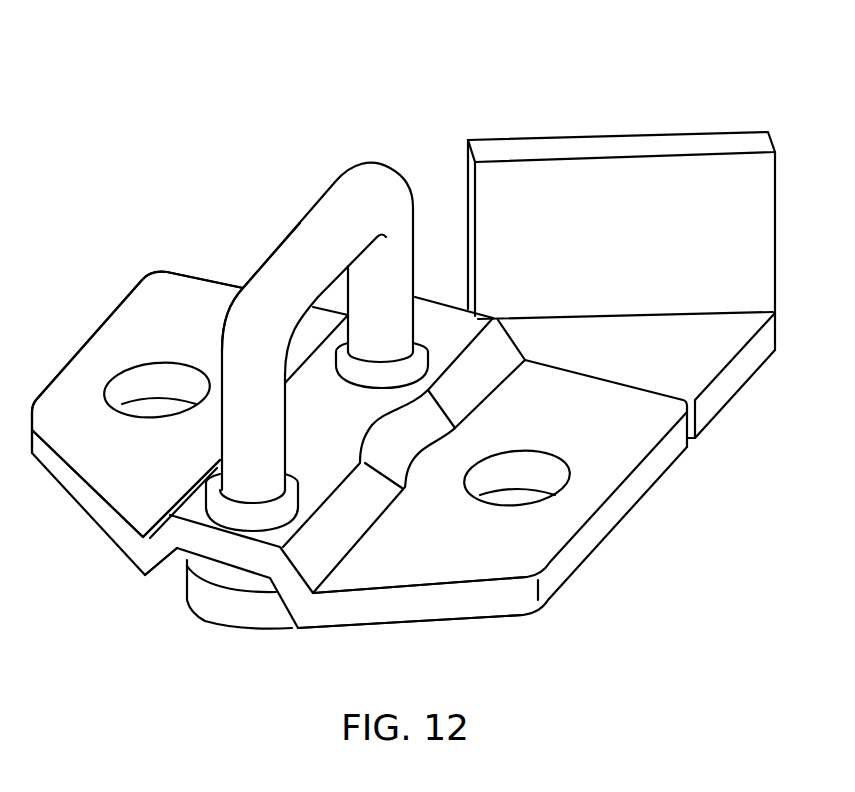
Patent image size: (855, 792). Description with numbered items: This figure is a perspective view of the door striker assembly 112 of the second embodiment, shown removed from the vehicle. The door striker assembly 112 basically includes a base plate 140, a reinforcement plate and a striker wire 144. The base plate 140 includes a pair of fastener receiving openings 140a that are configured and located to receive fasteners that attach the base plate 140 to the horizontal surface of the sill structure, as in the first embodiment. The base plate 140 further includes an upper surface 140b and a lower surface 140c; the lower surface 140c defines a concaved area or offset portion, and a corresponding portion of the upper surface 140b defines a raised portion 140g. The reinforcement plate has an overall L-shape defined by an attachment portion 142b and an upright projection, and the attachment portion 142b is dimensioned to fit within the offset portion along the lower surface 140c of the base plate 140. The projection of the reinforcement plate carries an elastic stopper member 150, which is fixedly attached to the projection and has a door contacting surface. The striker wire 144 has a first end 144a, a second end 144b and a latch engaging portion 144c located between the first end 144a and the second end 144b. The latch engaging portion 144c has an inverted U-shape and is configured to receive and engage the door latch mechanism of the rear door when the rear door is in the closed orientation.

The door striker assembly 112 is at (553, 66).
The base plate 140 is at (475, 548).
The fastener receiving openings 140a is at (160, 383).
The upper surface 140b is at (183, 300).
The lower surface 140c is at (429, 618).
The raised portion 140g is at (162, 550).
The attachment portion 142b is at (230, 610).
The striker wire 144 is at (340, 218).
The first end 144a is at (245, 473).
The second end 144b is at (380, 342).
The latch engaging portion 144c is at (287, 288).
The elastic stopper member 150 is at (691, 143).